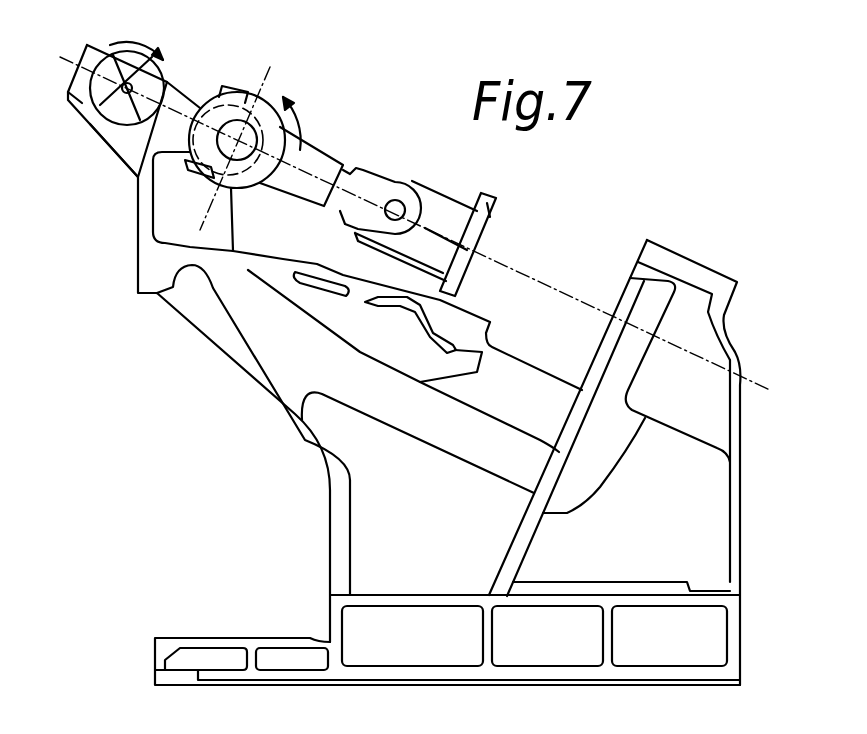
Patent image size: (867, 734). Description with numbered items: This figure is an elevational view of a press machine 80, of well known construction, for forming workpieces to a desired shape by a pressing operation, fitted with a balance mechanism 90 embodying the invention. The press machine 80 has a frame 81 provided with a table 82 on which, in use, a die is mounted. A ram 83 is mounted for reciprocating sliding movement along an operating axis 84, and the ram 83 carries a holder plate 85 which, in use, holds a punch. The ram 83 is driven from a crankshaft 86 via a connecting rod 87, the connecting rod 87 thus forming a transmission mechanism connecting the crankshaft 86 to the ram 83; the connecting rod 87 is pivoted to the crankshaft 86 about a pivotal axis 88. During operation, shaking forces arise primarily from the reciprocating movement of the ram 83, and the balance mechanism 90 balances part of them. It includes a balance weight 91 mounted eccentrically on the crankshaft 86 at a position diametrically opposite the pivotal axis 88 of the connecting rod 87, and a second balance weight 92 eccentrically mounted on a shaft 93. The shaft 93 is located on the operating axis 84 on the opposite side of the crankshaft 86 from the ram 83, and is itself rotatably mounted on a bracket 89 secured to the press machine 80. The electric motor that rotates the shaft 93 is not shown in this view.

The press machine 80 is at (765, 643).
The frame 81 is at (737, 527).
The table 82 is at (630, 278).
The ram 83 is at (428, 208).
The operating axis 84 is at (753, 373).
The holder plate 85 is at (484, 198).
The crankshaft 86 is at (237, 133).
The connecting rod 87 is at (317, 163).
The pivotal axis 88 is at (217, 127).
The bracket 89 is at (80, 82).
The balance mechanism 90 is at (85, 158).
The balance weight 91 is at (247, 192).
The balance weight 92 is at (126, 160).
The shaft 93 is at (82, 103).